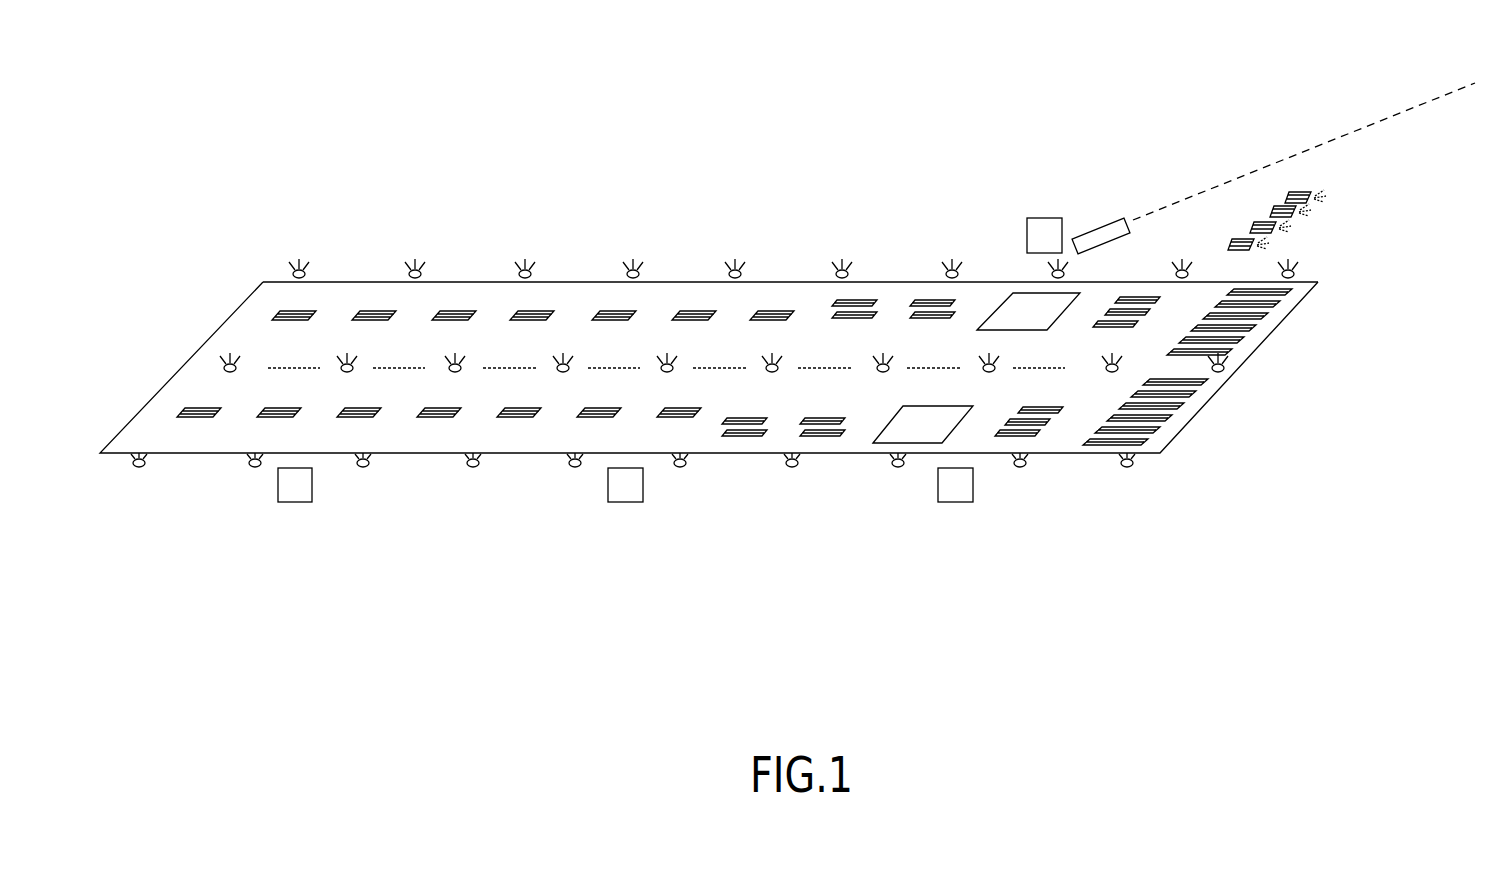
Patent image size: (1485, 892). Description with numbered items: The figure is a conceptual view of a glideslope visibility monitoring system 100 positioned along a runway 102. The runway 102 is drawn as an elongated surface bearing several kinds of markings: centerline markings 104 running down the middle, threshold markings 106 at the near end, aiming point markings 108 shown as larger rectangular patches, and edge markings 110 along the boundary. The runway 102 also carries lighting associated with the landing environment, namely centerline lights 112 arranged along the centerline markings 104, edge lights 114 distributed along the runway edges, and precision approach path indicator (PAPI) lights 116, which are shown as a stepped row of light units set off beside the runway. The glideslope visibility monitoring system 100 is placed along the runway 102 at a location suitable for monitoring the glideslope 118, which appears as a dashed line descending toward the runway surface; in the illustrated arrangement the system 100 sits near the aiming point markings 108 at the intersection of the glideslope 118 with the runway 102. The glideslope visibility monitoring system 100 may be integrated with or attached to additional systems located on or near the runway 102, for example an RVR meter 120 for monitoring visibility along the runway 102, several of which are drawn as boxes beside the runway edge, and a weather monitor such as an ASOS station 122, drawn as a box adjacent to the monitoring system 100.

The glideslope visibility monitoring system 100 is at (1097, 226).
The runway 102 is at (263, 282).
The centerline markings 104 is at (275, 367).
The threshold markings 106 is at (1163, 423).
The aiming point markings 108 is at (891, 447).
The edge markings 110 is at (692, 282).
The centerline lights 112 is at (232, 352).
The edge lights 114 is at (418, 261).
The precision approach path indicator (PAPI) lights 116 is at (1303, 192).
The glideslope 118 is at (1307, 150).
The RVR meter 120 is at (295, 502).
The ASOS station 122 is at (1027, 240).